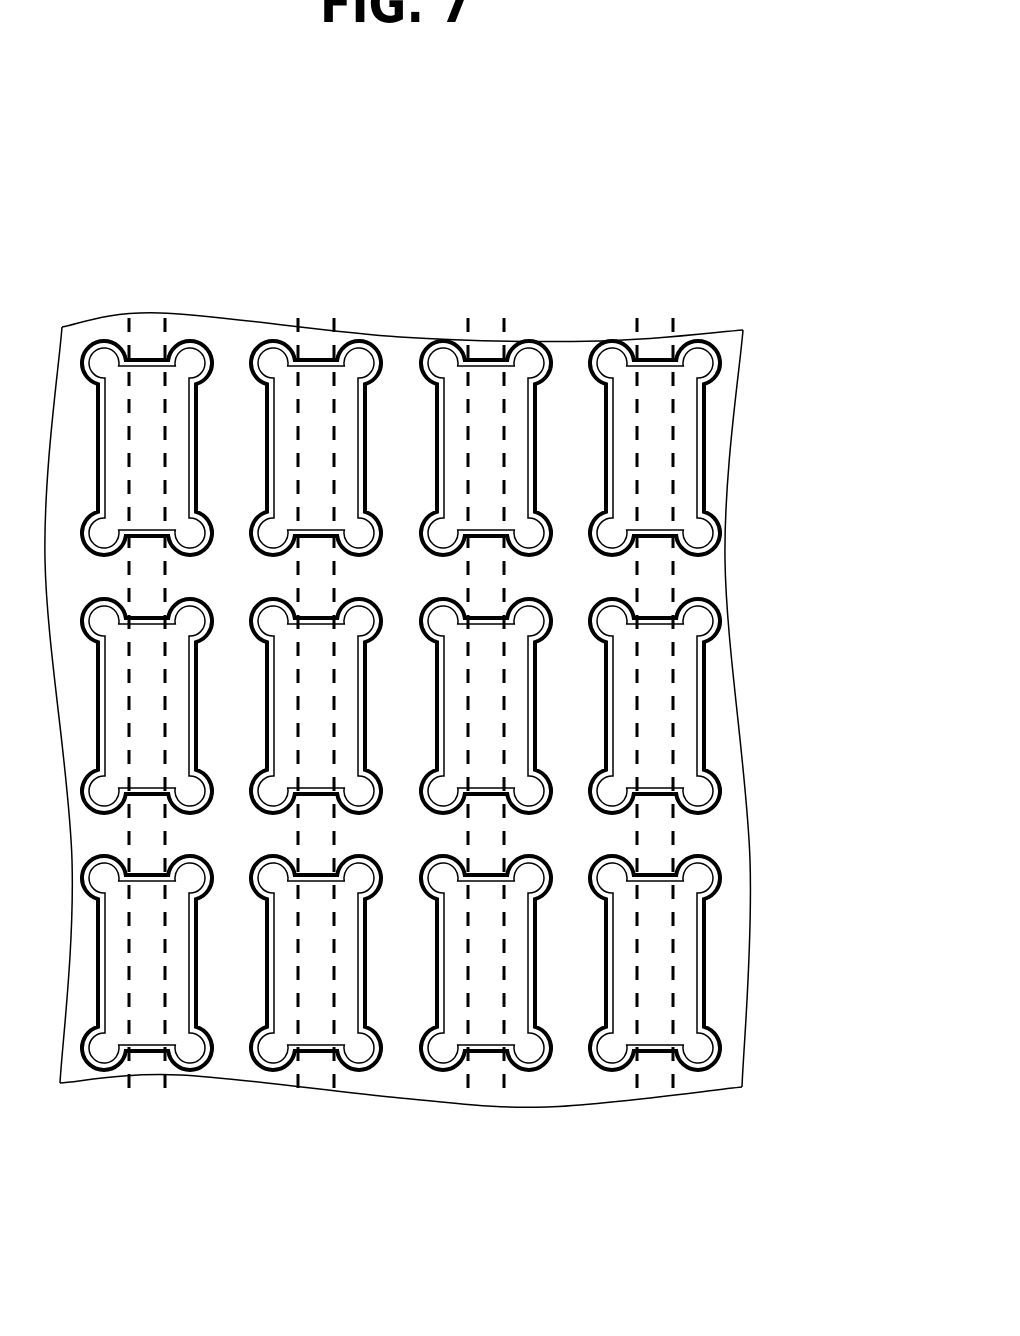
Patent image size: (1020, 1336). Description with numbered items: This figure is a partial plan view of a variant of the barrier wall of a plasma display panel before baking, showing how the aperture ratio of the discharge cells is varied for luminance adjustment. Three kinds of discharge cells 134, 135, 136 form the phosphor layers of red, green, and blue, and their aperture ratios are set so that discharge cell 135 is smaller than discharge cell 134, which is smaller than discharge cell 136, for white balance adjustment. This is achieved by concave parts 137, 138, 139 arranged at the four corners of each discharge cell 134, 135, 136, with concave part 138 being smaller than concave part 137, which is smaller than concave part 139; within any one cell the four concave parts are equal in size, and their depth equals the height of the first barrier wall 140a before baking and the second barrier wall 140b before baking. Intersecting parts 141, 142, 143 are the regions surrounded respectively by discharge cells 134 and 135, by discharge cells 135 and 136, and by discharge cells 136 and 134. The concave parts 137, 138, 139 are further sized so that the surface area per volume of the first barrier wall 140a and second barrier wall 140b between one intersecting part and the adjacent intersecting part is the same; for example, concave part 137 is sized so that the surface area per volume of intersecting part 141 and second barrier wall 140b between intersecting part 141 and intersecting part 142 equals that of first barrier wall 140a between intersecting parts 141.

The discharge cell 134 is at (181, 405).
The discharge cell 135 is at (354, 405).
The discharge cell 136 is at (522, 405).
The concave part 137 is at (190, 1048).
The concave part 138 is at (359, 1048).
The concave part 139 is at (529, 1048).
The first barrier wall before baking 140a is at (569, 1229).
The second barrier wall before baking 140b is at (699, 836).
The intersecting part 141 is at (230, 576).
The intersecting part 142 is at (399, 576).
The intersecting part 143 is at (565, 576).